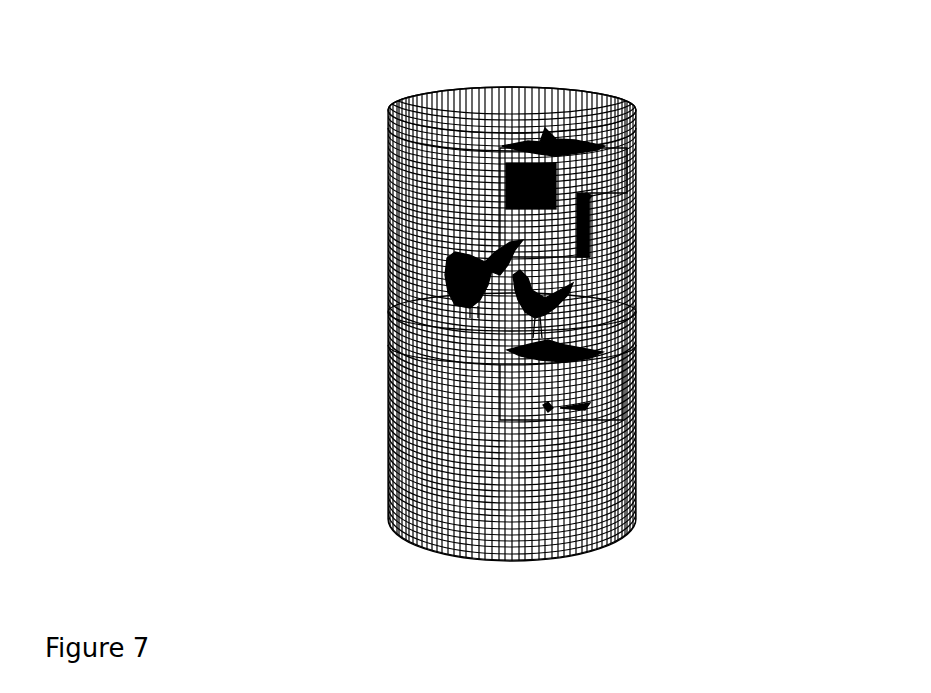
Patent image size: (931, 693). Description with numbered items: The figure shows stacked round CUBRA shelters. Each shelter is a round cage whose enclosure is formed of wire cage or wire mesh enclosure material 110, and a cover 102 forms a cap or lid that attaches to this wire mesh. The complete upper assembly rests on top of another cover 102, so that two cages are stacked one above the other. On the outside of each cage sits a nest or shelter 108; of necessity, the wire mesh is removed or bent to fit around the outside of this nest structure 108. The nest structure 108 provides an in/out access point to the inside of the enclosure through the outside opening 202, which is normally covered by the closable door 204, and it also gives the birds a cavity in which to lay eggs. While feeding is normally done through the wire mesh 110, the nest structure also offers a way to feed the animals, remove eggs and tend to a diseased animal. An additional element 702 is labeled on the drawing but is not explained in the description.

The cover 102 is at (407, 107).
The predator image 702 is at (604, 124).
The nest or shelter 108 is at (605, 160).
The outside opening 202 is at (502, 181).
The closable door 204 is at (606, 217).
The wire mesh enclosure material 110 is at (603, 268).